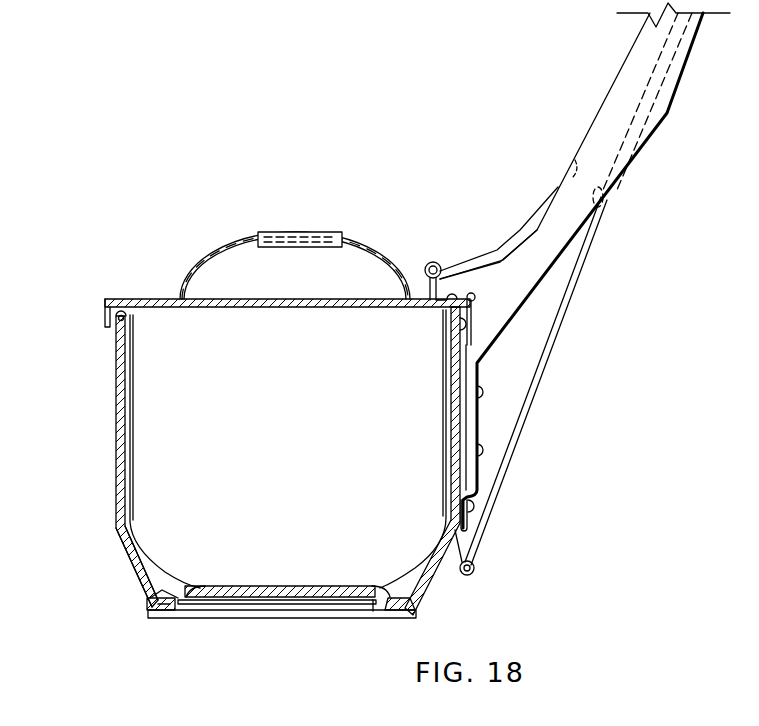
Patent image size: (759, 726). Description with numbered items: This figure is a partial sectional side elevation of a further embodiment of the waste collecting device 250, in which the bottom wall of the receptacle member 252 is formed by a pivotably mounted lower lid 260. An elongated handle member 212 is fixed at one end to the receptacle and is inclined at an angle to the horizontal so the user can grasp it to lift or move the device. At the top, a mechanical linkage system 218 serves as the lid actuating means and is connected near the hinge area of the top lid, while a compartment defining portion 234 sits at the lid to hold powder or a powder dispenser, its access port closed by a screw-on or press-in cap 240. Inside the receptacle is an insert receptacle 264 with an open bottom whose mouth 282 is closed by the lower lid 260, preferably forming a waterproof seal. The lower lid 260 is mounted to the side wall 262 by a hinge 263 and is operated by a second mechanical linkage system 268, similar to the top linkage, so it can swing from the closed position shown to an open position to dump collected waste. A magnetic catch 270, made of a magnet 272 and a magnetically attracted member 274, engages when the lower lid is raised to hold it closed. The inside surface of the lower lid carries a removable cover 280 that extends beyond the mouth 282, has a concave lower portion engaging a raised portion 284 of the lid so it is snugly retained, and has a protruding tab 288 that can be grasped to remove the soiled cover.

The elongated handle member 212 is at (648, 111).
The mechanical linkage system 218 is at (478, 262).
The compartment defining portion 234 is at (227, 270).
The cap 240 is at (297, 232).
The device 250 is at (640, 424).
The receptacle member 252 is at (117, 371).
The lower lid 260 is at (225, 614).
The side wall 262 is at (112, 500).
The hinge 263 is at (466, 522).
The insert receptacle 264 is at (133, 423).
The second mechanical linkage system 268 is at (548, 343).
The magnetic catch 270 is at (150, 610).
The magnet 272 is at (148, 600).
The magnetically attracted member 274 is at (165, 610).
The removable cover 280 is at (328, 586).
The mouth 282 is at (203, 588).
The raised portion 284 is at (310, 603).
The protruding tab 288 is at (405, 594).